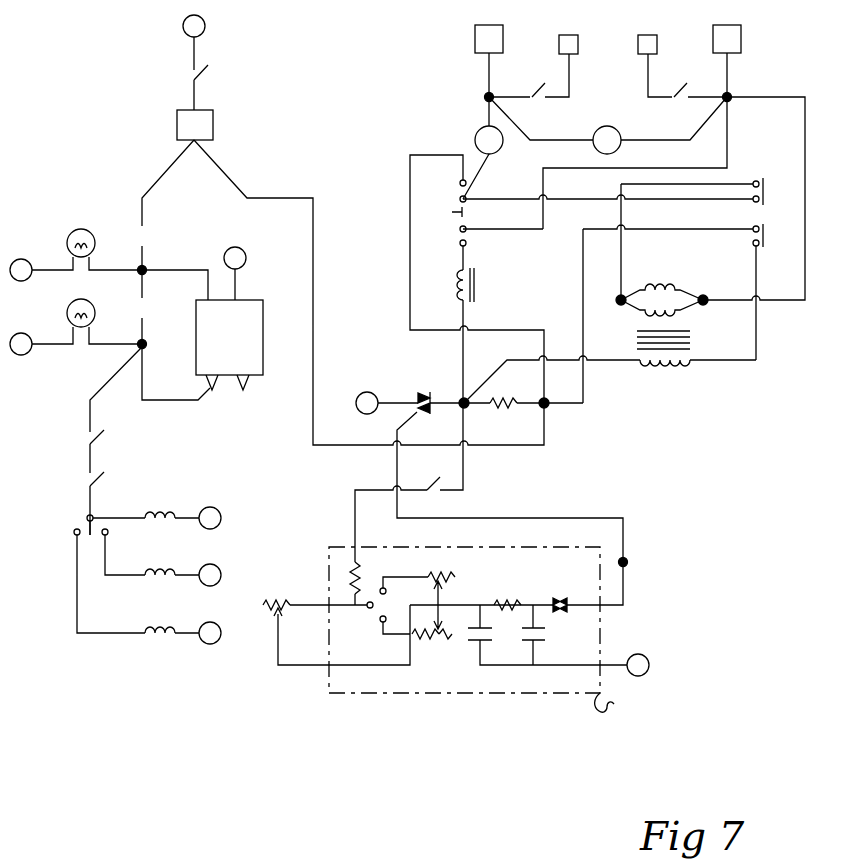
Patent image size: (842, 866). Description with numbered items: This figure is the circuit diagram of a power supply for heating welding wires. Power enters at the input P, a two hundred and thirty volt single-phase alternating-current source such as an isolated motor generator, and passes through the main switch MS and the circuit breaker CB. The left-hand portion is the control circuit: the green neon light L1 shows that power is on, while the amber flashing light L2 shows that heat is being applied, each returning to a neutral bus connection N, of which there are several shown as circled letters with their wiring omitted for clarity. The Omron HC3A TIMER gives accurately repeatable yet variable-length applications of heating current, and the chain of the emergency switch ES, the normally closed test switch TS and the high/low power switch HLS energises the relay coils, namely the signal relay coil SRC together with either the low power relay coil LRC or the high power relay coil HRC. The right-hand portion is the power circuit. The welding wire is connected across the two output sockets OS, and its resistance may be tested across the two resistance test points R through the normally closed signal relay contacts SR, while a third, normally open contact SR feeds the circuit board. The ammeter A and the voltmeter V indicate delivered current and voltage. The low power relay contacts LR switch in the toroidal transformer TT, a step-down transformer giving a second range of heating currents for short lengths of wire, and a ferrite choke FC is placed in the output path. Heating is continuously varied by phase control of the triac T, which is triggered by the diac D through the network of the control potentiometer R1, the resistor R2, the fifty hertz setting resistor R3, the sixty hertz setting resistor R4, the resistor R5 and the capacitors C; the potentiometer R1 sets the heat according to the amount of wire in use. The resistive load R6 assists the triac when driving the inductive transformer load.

The input P is at (194, 42).
The main switch MS is at (215, 80).
The circuit breaker CB is at (404, 411).
The green neon light L1 is at (91, 236).
The amber flashing light L2 is at (91, 303).
The neutral bus connection N is at (329, 461).
The timer TIMER is at (229, 345).
The emergency switch ES is at (109, 431).
The test switch TS is at (109, 472).
The high/low power switch HLS is at (107, 516).
The signal relay coil SRC is at (163, 502).
The low power relay coil LRC is at (166, 560).
The high power relay coil HRC is at (167, 618).
The output socket OS is at (608, 39).
The resistance test point R is at (554, 140).
The signal relay contact SR is at (556, 276).
The ammeter A is at (489, 140).
The voltmeter V is at (607, 140).
The low power relay contacts LR is at (753, 212).
The toroidal transformer TT is at (670, 319).
The ferrite choke FC is at (482, 285).
The triac T is at (423, 392).
The control potentiometer R1 is at (277, 592).
The resistor R2 is at (369, 573).
The resistor R3 is at (441, 568).
The resistor R4 is at (433, 644).
The resistor R5 is at (508, 594).
The resistive load R6 is at (504, 393).
The diac D is at (561, 591).
The capacitor C is at (506, 635).